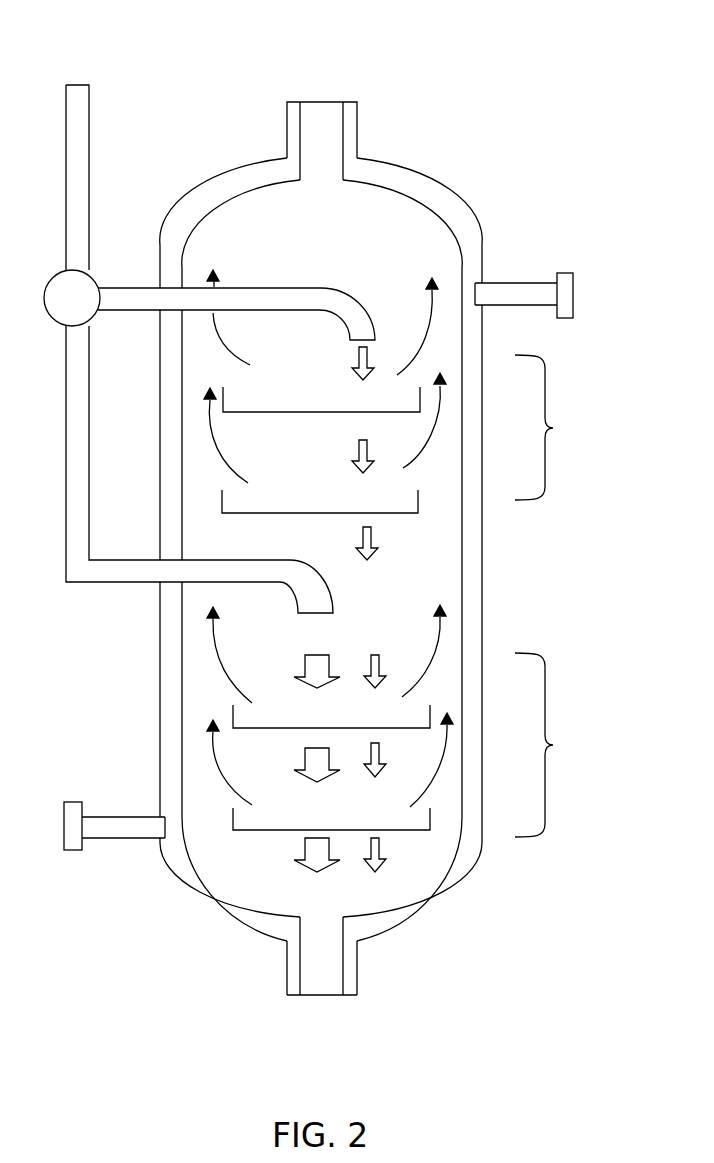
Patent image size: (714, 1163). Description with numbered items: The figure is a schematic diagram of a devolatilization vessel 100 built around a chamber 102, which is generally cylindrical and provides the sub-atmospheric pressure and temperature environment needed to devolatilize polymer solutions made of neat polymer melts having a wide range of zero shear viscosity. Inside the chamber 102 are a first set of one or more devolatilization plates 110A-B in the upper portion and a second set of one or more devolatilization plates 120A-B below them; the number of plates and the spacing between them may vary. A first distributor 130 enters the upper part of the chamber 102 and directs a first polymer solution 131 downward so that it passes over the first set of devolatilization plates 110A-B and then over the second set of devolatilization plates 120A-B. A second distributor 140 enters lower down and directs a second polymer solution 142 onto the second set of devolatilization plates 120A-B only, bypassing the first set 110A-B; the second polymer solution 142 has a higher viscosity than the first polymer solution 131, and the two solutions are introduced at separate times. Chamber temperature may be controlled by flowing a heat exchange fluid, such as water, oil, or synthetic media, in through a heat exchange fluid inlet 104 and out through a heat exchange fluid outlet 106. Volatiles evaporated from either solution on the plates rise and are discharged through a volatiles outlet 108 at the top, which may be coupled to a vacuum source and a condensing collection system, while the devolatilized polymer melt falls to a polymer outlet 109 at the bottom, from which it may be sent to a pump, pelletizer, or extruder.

The devolatilization vessel 100 is at (480, 1000).
The chamber 102 is at (435, 185).
The heat exchange fluid inlet 104 is at (517, 303).
The heat exchange fluid outlet 106 is at (118, 815).
The volatiles outlet 108 is at (313, 135).
The polymer outlet 109 is at (322, 951).
The first set of one or more devolatilization plates 110A-B is at (555, 429).
The second set of one or more devolatilization plates 120A-B is at (555, 745).
The first distributor 130 is at (123, 298).
The first polymer solution 131 is at (355, 367).
The second distributor 140 is at (118, 570).
The second polymer solution 142 is at (313, 660).